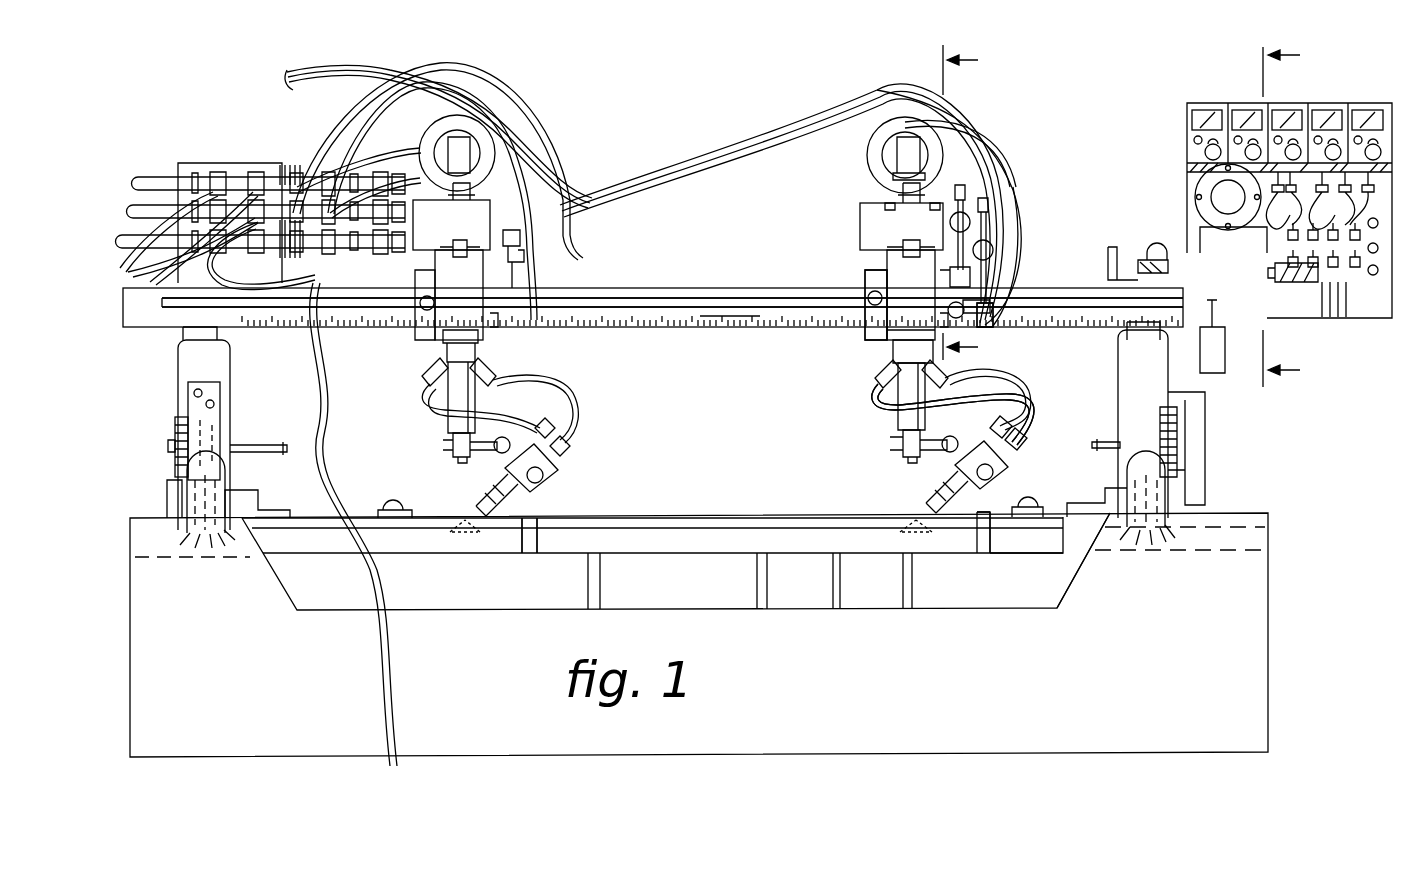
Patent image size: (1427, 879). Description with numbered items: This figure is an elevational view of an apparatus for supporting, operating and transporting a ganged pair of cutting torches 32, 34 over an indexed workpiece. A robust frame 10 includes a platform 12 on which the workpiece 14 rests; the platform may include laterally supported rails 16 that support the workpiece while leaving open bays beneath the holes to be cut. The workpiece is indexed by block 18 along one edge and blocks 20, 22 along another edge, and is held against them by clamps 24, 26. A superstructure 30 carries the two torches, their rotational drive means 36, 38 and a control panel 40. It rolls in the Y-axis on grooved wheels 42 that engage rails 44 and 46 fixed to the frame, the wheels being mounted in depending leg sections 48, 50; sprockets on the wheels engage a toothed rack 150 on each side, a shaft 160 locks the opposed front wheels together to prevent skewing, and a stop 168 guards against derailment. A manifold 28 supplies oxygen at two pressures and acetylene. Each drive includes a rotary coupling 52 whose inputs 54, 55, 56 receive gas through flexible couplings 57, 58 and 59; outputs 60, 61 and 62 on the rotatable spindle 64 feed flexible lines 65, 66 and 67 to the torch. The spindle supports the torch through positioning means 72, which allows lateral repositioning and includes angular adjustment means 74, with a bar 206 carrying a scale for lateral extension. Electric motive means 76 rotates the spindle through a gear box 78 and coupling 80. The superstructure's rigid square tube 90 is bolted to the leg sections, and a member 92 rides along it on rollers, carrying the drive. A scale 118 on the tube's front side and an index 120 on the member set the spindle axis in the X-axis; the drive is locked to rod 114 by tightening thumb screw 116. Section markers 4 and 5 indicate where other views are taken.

The frame 10 is at (1253, 588).
The platform 12 is at (1017, 540).
The workpiece 14 is at (735, 518).
The laterally supported rails 16 is at (930, 560).
The block 18 is at (1085, 508).
The block 20 is at (980, 512).
The block 22 is at (535, 515).
The clamp 24 is at (1030, 503).
The clamp 26 is at (395, 500).
The manifold 28 is at (255, 163).
The superstructure 30 is at (716, 290).
The cutting torch 32 is at (970, 480).
The cutting torch 34 is at (570, 460).
The rotational drive means 36 is at (887, 250).
The rotational drive means 38 is at (447, 329).
The control panel 40 is at (1354, 292).
The grooved wheels 42 is at (193, 415).
The rail 44 is at (1180, 467).
The rail 46 is at (183, 485).
The leg section 48 is at (1170, 380).
The leg section 50 is at (232, 393).
The rotary coupling 52 is at (900, 350).
The input 54 is at (968, 270).
The input 55 is at (965, 330).
The input 56 is at (990, 328).
The flexible coupling 57 is at (920, 163).
The flexible coupling 58 is at (1013, 190).
The flexible coupling 59 is at (963, 157).
The output 60 is at (1098, 445).
The output 61 is at (1000, 378).
The output 62 is at (935, 378).
The rotatable spindle 64 is at (900, 393).
The flexible line 65 is at (920, 405).
The flexible line 66 is at (1010, 400).
The flexible line 67 is at (1010, 365).
The positioning means 72 is at (915, 457).
The angular adjustment means 74 is at (930, 480).
The electric motive means 76 is at (880, 118).
The gear box 78 is at (947, 126).
The coupling 80 is at (862, 212).
The square tube 90 is at (662, 288).
The member 92 is at (885, 335).
The rod 114 is at (1050, 290).
The thumb screw 116 is at (866, 278).
The scale 118 is at (740, 328).
The index 120 is at (900, 338).
The toothed rack 150 is at (176, 500).
The shaft 160 is at (258, 448).
The stop 168 is at (1108, 515).
The bar 206 is at (905, 448).
The section line 4 is at (1289, 216).
The section line 5 is at (968, 202).